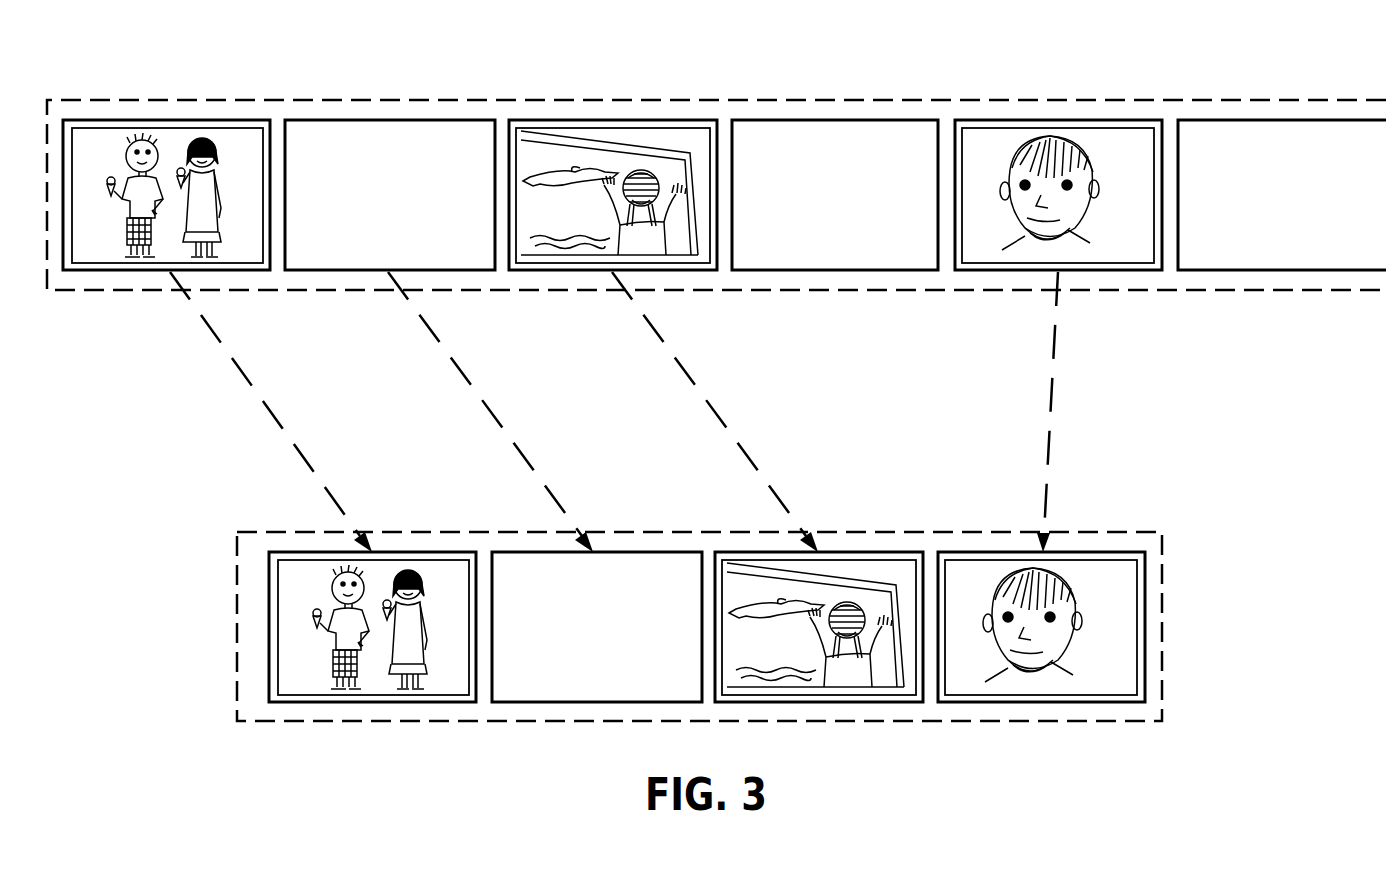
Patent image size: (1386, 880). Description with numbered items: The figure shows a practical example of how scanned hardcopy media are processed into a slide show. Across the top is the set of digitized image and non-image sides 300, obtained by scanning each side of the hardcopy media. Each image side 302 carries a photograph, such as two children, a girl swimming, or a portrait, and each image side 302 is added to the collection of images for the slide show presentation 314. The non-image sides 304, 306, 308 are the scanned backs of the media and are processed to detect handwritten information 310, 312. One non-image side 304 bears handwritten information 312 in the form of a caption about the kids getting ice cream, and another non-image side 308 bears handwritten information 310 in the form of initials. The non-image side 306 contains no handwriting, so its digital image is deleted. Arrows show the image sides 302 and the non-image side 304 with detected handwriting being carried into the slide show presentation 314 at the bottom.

The set of digitized image and non-image sides 300 is at (93, 292).
The image side 302 is at (165, 118).
The non-image side 304 is at (390, 182).
The non-image side 306 is at (833, 118).
The non-image side 308 is at (1282, 184).
The handwritten information 310 is at (1218, 258).
The handwritten information 312 is at (333, 245).
The slide show presentation 314 is at (397, 722).